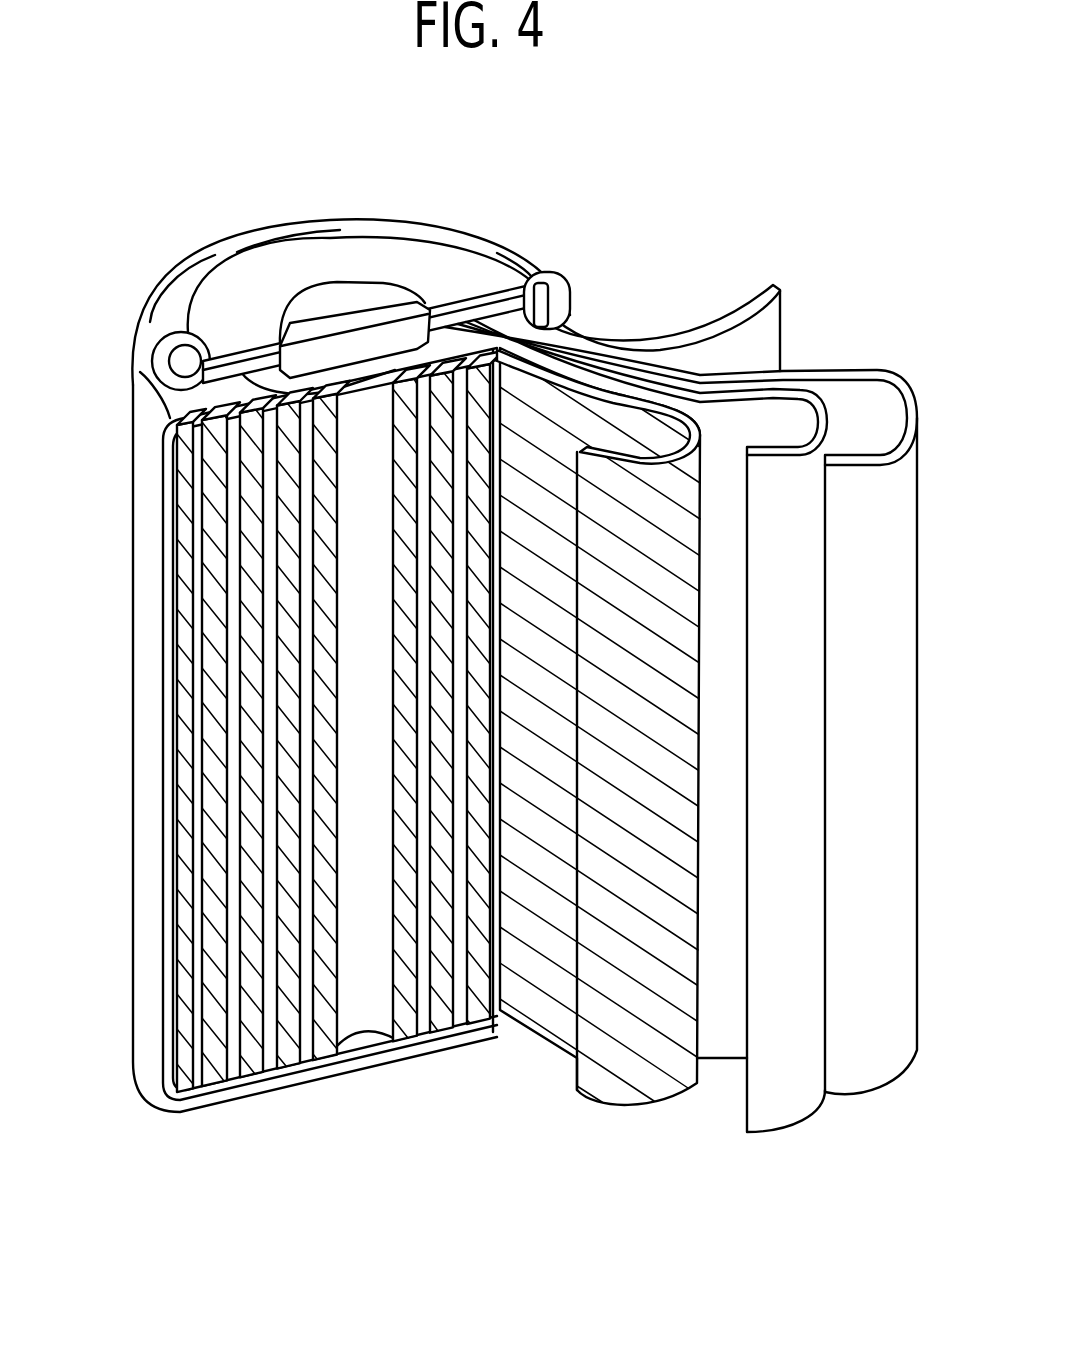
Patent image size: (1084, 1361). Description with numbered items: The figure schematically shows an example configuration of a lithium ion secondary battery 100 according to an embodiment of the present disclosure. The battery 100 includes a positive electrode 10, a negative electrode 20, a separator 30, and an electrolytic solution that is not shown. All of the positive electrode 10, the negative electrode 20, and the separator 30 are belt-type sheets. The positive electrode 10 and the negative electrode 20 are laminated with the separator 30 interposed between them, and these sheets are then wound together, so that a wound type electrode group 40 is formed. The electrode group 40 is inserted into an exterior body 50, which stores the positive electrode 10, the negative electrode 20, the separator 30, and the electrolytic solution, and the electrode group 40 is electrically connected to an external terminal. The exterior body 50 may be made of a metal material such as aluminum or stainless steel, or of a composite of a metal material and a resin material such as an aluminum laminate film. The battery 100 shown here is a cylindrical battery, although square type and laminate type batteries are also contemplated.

The positive electrode 10 is at (637, 1090).
The negative electrode 20 is at (885, 1078).
The separator 30 is at (762, 1117).
The electrode group 40 is at (925, 1203).
The exterior body 50 is at (140, 449).
The battery 100 is at (898, 176).